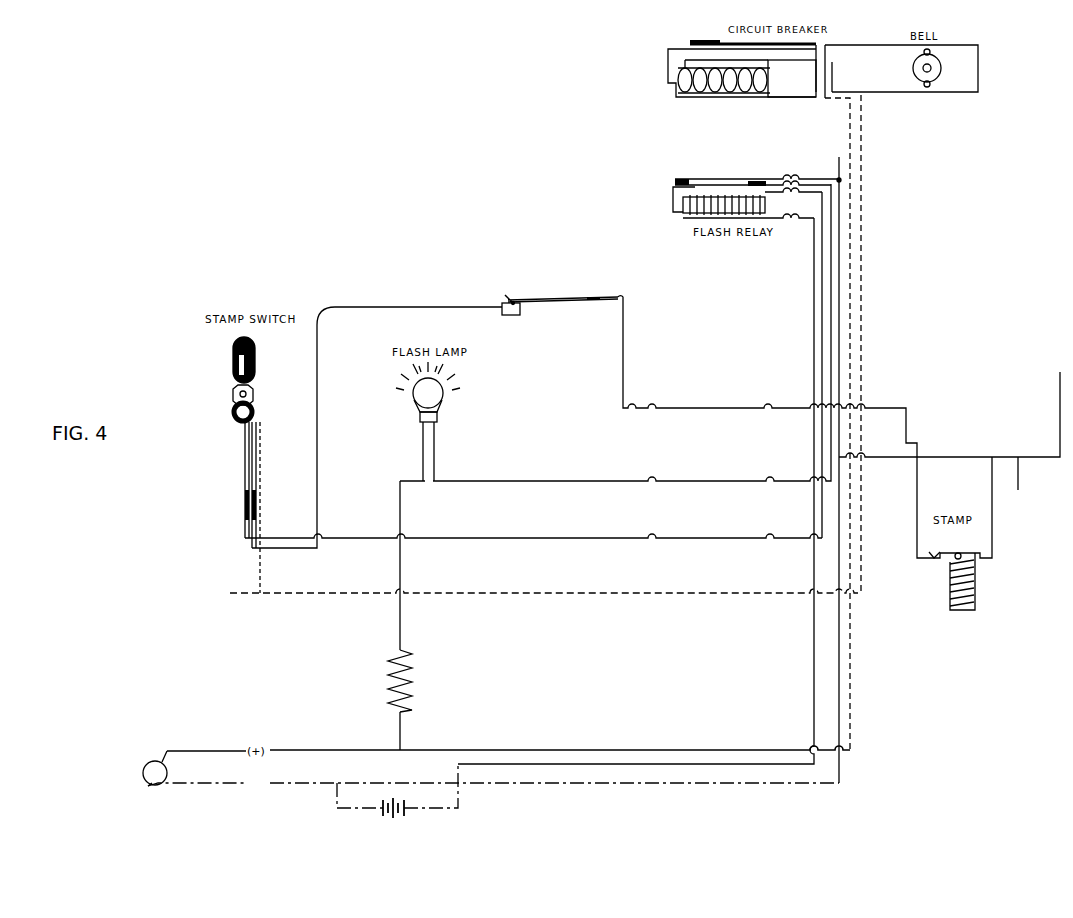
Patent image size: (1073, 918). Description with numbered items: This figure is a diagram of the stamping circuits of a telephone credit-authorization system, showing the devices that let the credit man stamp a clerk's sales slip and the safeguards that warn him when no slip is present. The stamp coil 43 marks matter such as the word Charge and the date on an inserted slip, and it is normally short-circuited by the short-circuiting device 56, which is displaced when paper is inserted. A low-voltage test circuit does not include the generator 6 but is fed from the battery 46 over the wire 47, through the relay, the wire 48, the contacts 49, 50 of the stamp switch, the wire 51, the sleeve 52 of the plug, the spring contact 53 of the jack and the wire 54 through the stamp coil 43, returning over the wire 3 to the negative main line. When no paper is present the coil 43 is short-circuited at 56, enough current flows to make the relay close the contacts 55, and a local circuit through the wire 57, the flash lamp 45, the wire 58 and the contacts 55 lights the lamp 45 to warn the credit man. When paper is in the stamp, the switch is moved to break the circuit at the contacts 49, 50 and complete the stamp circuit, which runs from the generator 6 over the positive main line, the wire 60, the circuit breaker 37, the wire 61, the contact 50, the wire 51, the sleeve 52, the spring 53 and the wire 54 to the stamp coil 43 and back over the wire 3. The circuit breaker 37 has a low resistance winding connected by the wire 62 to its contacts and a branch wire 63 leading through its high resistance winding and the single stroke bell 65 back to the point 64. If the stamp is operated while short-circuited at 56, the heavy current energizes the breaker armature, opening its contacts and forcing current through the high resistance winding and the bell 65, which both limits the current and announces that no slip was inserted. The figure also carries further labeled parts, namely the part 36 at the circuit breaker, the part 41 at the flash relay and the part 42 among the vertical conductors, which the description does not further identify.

The wire 3 is at (935, 457).
The generator 6 is at (142, 770).
The circuit breaker armature 36 is at (712, 38).
The circuit breaker 37 is at (715, 94).
The flash relay coil 41 is at (767, 199).
The conductor 42 is at (838, 631).
The stamp coil 43 is at (948, 580).
The flash lamp 45 is at (437, 416).
The battery 46 is at (388, 814).
The wire 47 is at (622, 768).
The wire 48 is at (822, 289).
The contact 49 is at (244, 440).
The contact 50 is at (253, 415).
The wire 51 is at (441, 308).
The sleeve 52 is at (511, 315).
The spring contact 53 is at (530, 299).
The wire 54 is at (708, 401).
The contacts 55 is at (724, 184).
The short-circuiting device 56 is at (950, 554).
The wire 57 is at (401, 648).
The wire 58 is at (608, 478).
The wire 60 is at (851, 713).
The wire 61 is at (868, 300).
The wire 62 is at (758, 97).
The wire 63 is at (778, 60).
The point 64 is at (828, 47).
The single stroke bell 65 is at (936, 78).